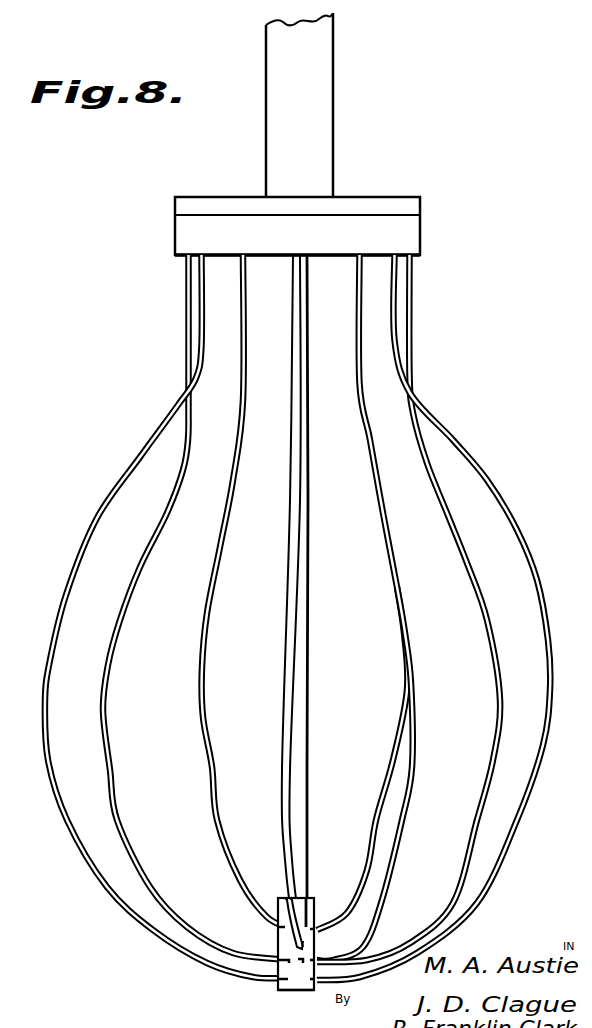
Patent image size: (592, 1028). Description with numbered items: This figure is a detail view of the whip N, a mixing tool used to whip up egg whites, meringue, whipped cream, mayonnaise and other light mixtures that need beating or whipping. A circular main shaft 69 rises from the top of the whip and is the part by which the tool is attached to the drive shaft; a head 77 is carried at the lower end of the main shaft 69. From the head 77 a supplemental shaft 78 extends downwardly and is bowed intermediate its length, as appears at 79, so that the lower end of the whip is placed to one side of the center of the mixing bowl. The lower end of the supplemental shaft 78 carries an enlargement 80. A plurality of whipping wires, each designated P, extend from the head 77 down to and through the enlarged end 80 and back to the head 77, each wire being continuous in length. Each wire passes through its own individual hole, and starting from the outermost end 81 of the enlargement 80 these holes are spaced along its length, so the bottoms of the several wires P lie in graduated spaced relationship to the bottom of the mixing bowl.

The main shaft 69 is at (323, 93).
The head 77 is at (330, 225).
The whip N is at (319, 206).
The whipping wire P is at (518, 535).
The supplemental shaft 78 is at (299, 477).
The bow 79 is at (307, 697).
The enlargement 80 is at (302, 913).
The outermost end 81 is at (294, 987).